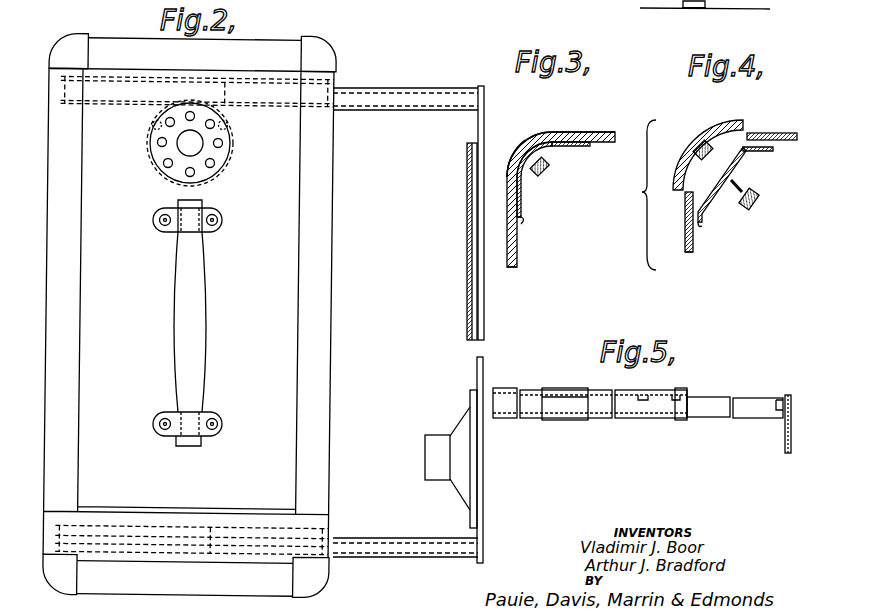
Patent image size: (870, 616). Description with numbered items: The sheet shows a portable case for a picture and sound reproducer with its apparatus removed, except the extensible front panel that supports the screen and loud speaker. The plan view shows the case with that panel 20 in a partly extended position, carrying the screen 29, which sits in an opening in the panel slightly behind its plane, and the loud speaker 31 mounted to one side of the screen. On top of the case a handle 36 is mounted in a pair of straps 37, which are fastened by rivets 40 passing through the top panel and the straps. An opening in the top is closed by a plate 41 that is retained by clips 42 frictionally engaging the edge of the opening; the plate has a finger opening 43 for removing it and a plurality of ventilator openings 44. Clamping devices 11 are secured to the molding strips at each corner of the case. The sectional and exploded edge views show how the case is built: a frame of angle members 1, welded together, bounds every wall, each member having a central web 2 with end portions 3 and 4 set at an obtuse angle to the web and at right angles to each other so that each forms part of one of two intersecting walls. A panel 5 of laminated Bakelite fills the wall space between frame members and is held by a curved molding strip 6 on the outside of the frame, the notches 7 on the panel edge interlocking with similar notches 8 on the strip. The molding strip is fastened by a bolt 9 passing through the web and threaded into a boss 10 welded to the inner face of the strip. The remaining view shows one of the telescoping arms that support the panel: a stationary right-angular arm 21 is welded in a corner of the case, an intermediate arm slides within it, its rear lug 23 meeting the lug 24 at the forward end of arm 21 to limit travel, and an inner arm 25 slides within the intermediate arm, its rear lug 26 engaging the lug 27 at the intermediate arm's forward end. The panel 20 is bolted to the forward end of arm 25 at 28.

In FIG. 3, the angle member 1 is at (568, 156).
In FIG. 3, the web 2 is at (526, 188).
In FIG. 4, the web 2 is at (708, 188).
In FIG. 3, the end portion 3 is at (522, 222).
In FIG. 4, the end portion 3 is at (703, 220).
In FIG. 3, the end portion 4 is at (580, 145).
In FIG. 4, the end portion 4 is at (755, 152).
In FIG. 3, the panel 5 is at (515, 263).
In FIG. 4, the panel 5 is at (693, 245).
In FIG. 3, the molding strip 6 is at (545, 132).
In FIG. 4, the molding strip 6 is at (718, 124).
In FIG. 4, the notch 7 is at (684, 205).
In FIG. 4, the notch 8 is at (752, 131).
In FIG. 3, the bolt 9 is at (545, 173).
In FIG. 4, the bolt 9 is at (748, 207).
In FIG. 3, the boss 10 is at (513, 180).
In FIG. 4, the boss 10 is at (678, 175).
In FIG. 2, the clamping device 11 is at (320, 58).
In FIG. 2, the panel 20 is at (484, 326).
In FIG. 5, the panel 20 is at (785, 440).
In FIG. 5, the arm 21 is at (504, 388).
In FIG. 5, the lug 23 is at (545, 400).
In FIG. 5, the lug 24 is at (583, 400).
In FIG. 5, the arm 25 is at (722, 397).
In FIG. 5, the lug 26 is at (643, 400).
In FIG. 5, the lug 27 is at (680, 400).
In FIG. 5, the bolted connection 28 is at (764, 385).
In FIG. 2, the screen 29 is at (467, 256).
In FIG. 2, the loud speaker 31 is at (440, 465).
In FIG. 2, the handle 36 is at (175, 322).
In FIG. 2, the strap 37 is at (218, 215).
In FIG. 2, the rivet 40 is at (160, 225).
In FIG. 2, the plate 41 is at (157, 163).
In FIG. 2, the clip 42 is at (230, 126).
In FIG. 2, the opening 43 is at (180, 145).
In FIG. 2, the ventilator opening 44 is at (218, 145).